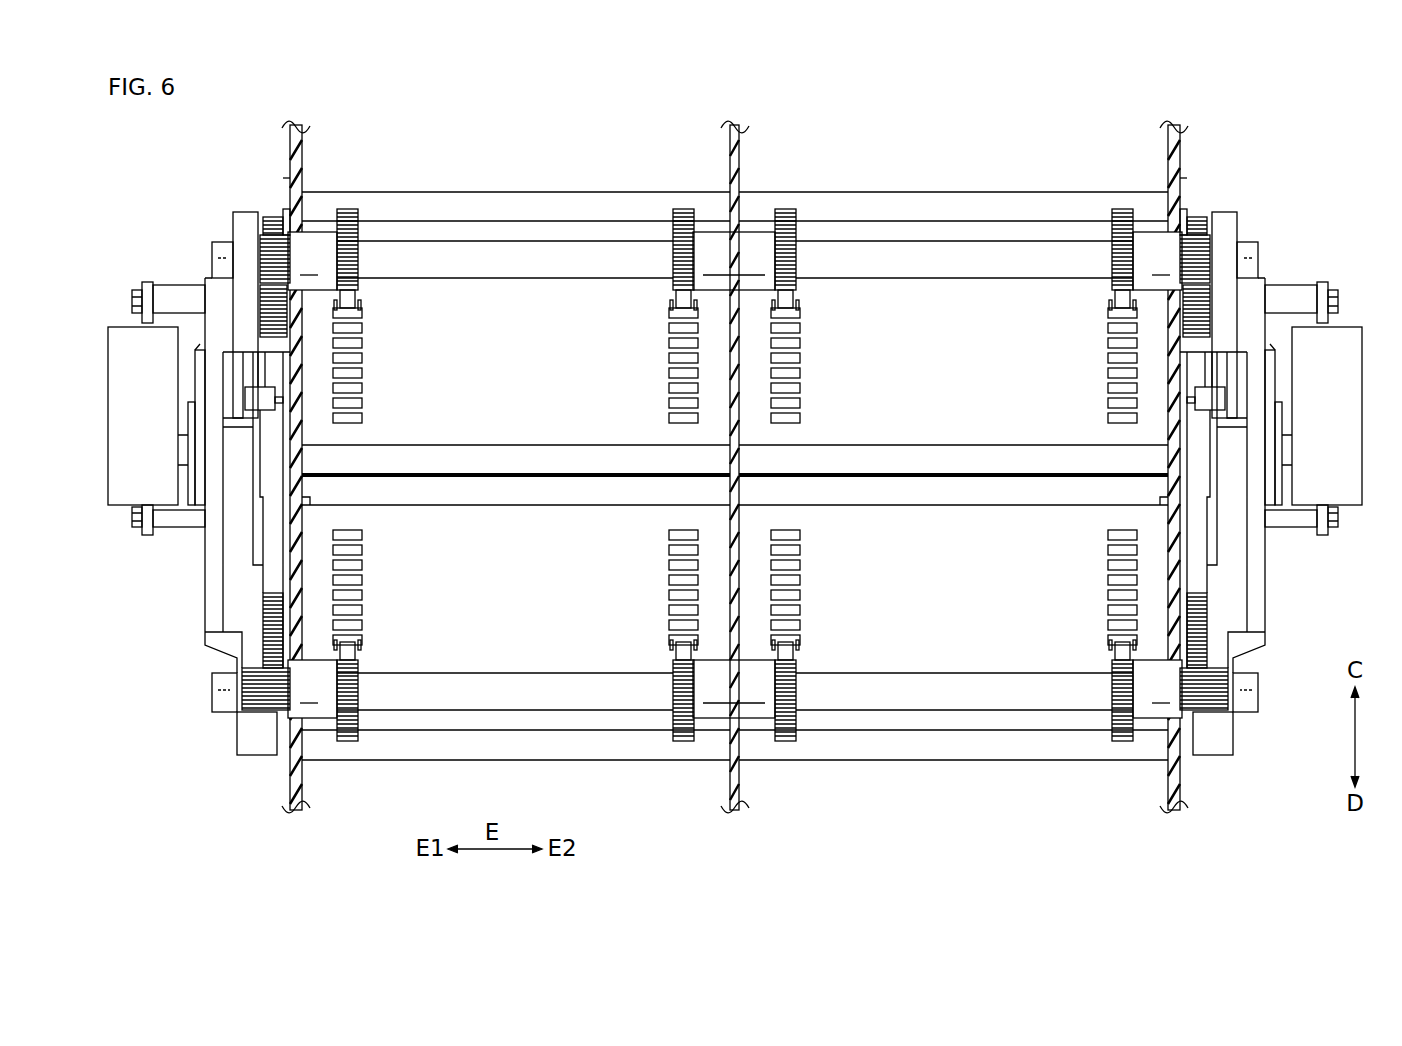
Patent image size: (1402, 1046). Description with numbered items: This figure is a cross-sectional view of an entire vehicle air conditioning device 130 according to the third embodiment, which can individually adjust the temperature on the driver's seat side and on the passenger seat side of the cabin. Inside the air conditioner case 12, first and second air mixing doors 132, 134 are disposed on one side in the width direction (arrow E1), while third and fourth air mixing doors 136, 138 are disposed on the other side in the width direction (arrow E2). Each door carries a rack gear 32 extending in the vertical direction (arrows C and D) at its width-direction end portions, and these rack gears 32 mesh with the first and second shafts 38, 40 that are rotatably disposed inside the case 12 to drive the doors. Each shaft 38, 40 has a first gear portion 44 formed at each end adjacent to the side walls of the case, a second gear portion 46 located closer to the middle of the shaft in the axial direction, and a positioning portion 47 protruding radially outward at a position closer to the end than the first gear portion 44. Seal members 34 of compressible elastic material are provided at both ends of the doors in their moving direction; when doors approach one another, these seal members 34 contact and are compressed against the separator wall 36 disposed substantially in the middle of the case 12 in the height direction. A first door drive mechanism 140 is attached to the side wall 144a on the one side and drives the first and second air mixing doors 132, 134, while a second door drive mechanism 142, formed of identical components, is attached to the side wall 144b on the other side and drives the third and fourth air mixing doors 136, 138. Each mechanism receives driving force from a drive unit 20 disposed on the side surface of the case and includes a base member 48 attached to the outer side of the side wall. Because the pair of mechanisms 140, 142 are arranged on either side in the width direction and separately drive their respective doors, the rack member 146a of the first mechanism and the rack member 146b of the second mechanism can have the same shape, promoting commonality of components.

The vehicle air conditioning device 130 is at (550, 113).
The air conditioner case 12 is at (288, 143).
The first air mixing door 132 is at (500, 300).
The second air mixing door 134 is at (500, 655).
The third air mixing door 136 is at (968, 300).
The fourth air mixing door 138 is at (968, 655).
The seal member 34 is at (437, 210).
The separator wall 36 is at (522, 478).
The first shaft 38 is at (567, 260).
The second shaft 40 is at (567, 688).
The second gear portion 46 is at (350, 266).
The rack gear 32 is at (348, 356).
The first gear portion 44 is at (268, 246).
The positioning portion 47 is at (228, 259).
The base member 48 is at (212, 591).
The drive unit 20 is at (127, 489).
The first door drive mechanism 140 is at (127, 303).
The second door drive mechanism 142 is at (1343, 303).
The side wall 144a is at (290, 178).
The side wall 144b is at (1180, 178).
The rack member 146a is at (305, 498).
The rack member 146b is at (1165, 498).